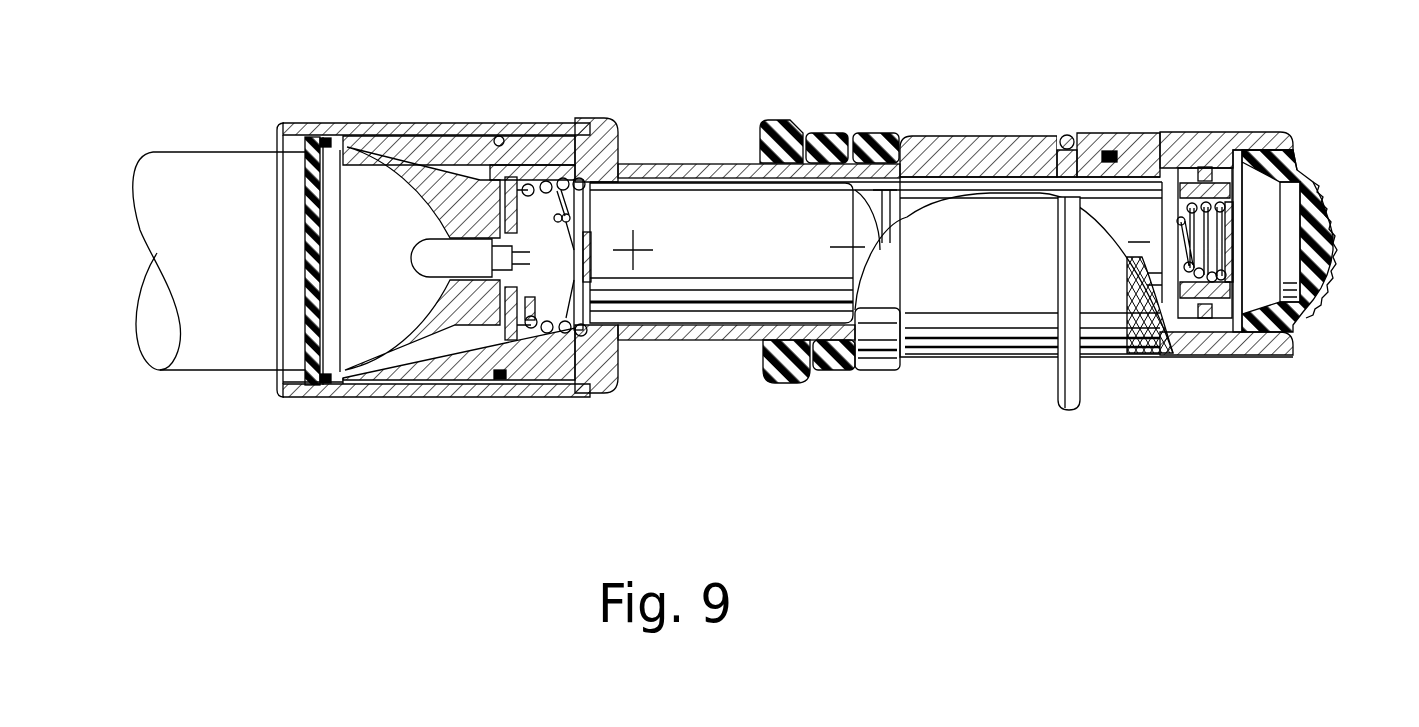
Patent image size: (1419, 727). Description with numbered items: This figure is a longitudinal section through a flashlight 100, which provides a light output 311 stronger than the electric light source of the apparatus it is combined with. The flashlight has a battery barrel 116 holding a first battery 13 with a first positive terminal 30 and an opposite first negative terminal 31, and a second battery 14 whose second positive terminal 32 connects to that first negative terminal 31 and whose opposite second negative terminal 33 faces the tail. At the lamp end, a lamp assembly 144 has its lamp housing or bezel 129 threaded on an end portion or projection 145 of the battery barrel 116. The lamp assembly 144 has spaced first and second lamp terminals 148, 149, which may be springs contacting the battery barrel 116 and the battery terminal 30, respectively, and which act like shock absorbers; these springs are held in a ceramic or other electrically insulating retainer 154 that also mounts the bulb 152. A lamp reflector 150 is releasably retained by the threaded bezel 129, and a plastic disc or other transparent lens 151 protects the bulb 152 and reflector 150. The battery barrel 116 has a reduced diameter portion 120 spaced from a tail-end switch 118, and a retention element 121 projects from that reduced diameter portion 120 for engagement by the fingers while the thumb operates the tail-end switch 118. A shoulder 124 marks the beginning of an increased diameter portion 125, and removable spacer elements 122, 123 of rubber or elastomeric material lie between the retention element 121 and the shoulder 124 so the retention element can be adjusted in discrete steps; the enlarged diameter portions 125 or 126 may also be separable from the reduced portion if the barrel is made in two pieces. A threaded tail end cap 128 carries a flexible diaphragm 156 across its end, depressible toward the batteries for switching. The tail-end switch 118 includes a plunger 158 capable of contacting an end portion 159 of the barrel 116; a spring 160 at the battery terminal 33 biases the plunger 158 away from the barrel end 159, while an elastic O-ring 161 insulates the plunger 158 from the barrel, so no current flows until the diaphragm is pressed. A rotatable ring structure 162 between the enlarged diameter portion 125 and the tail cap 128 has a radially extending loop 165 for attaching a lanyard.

The flashlight 100 is at (600, 113).
The light output 311 is at (215, 183).
The transparent lens 151 is at (305, 265).
The flashlight bulb 152 is at (427, 237).
The lamp reflector 150 is at (425, 327).
The end portion of the battery barrel 145 is at (423, 125).
The lamp housing 129 is at (482, 120).
The enlarged diameter portion 126 is at (598, 392).
The lamp assembly 144 is at (396, 375).
The retainer 154 is at (500, 337).
The first lamp terminal 148 is at (547, 336).
The second lamp terminal 149 is at (578, 228).
The first positive terminal 30 is at (586, 250).
The first negative terminal 31 is at (873, 182).
The first battery 13 is at (705, 230).
The reduced diameter portion 120 is at (723, 340).
The spacer element 122 is at (830, 130).
The retention element 121 is at (780, 385).
The spacer element 123 is at (883, 373).
The shoulder 124 is at (885, 250).
The increased diameter portion 125 is at (1050, 137).
The second positive terminal 32 is at (918, 200).
The second battery 14 is at (988, 175).
The battery barrel 116 is at (1008, 358).
The radially extending loop 165 is at (1058, 395).
The second negative terminal 33 is at (1168, 300).
The rotatable ring structure 162 is at (1073, 137).
The tail end cap 128 is at (1137, 132).
The spring 160 is at (1210, 150).
The end portion of the barrel 159 is at (1278, 135).
The elastic O-ring 161 is at (1250, 352).
The tail-end switch 118 is at (1340, 250).
The flexible diaphragm 156 is at (1322, 297).
The plunger 158 is at (1302, 155).